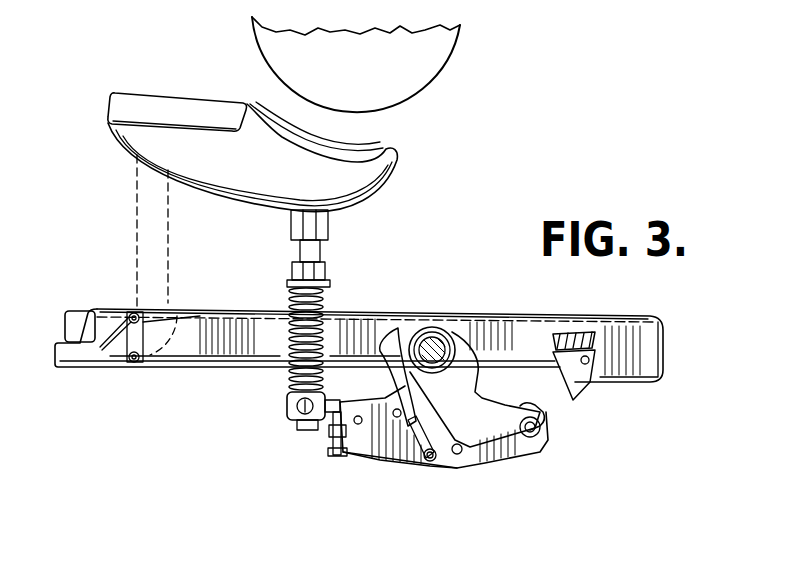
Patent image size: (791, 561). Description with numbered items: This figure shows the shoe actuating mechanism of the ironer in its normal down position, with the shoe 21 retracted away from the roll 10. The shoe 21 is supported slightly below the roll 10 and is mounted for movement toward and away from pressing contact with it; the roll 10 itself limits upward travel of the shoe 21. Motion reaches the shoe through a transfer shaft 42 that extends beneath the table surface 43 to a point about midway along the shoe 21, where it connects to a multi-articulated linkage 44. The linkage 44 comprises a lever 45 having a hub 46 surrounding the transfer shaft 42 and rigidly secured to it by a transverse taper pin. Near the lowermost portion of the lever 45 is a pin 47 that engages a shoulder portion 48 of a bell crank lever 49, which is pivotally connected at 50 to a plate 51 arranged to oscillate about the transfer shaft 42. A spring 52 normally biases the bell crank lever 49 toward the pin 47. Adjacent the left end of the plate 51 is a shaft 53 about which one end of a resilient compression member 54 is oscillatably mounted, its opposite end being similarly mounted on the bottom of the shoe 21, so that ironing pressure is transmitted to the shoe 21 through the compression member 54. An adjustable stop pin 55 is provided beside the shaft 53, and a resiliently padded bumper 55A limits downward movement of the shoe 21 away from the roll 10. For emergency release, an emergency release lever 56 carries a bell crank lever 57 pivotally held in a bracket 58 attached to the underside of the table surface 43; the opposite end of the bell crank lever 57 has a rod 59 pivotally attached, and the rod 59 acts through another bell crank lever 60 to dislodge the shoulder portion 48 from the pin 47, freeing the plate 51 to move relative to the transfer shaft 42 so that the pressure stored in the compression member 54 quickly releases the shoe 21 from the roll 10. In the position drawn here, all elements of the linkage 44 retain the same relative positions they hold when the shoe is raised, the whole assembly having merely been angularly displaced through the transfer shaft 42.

The roll 10 is at (455, 62).
The shoe 21 is at (383, 148).
The transfer shaft 42 is at (432, 336).
The table surface 43 is at (471, 318).
The multi-articulated linkage 44 is at (489, 481).
The lever 45 is at (485, 368).
The hub 46 is at (448, 352).
The pin 47 is at (545, 432).
The shoulder portion 48 is at (510, 452).
The bell crank lever 49 is at (522, 405).
The pivotal connection 50 is at (457, 455).
The plate 51 is at (382, 453).
The spring 52 is at (423, 460).
The shaft 53 is at (290, 413).
The resilient compression member 54 is at (291, 306).
The adjustable stop pin 55 is at (332, 428).
The resiliently padded bumper 55A is at (565, 333).
The emergency release lever 56 is at (85, 320).
The bell crank lever 57 is at (132, 312).
The bracket 58 is at (178, 318).
The rod 59 is at (200, 362).
The bell crank lever 60 is at (398, 328).